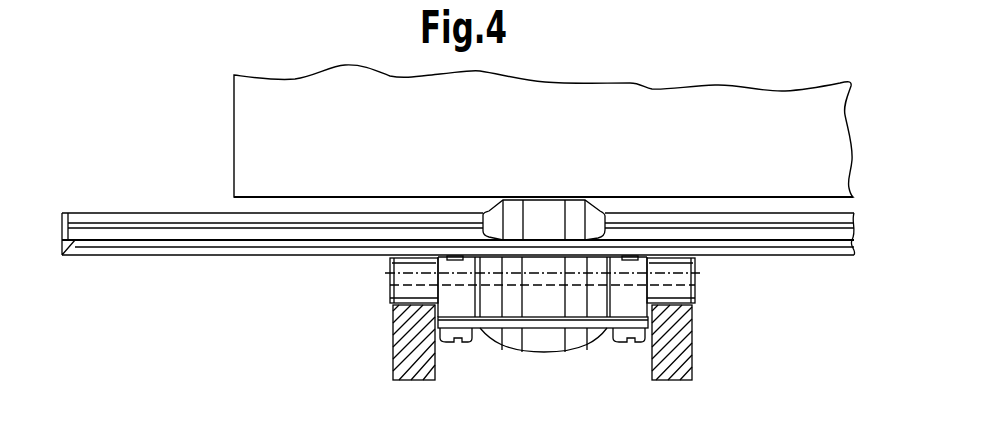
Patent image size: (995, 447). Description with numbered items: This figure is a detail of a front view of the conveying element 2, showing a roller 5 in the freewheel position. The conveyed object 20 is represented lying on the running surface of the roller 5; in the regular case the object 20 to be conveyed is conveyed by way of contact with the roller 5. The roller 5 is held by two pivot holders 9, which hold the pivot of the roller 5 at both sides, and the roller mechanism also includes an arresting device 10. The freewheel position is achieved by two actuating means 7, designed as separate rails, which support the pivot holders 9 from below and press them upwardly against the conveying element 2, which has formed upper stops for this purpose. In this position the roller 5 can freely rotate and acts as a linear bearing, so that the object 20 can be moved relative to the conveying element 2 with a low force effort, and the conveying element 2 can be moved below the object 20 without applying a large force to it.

The conveying element 2 is at (139, 237).
The object to be conveyed 20 is at (561, 150).
The pivot holders 9 is at (398, 293).
The actuating means 7 is at (410, 353).
The arresting device 10 is at (597, 323).
The roller 5 is at (542, 345).